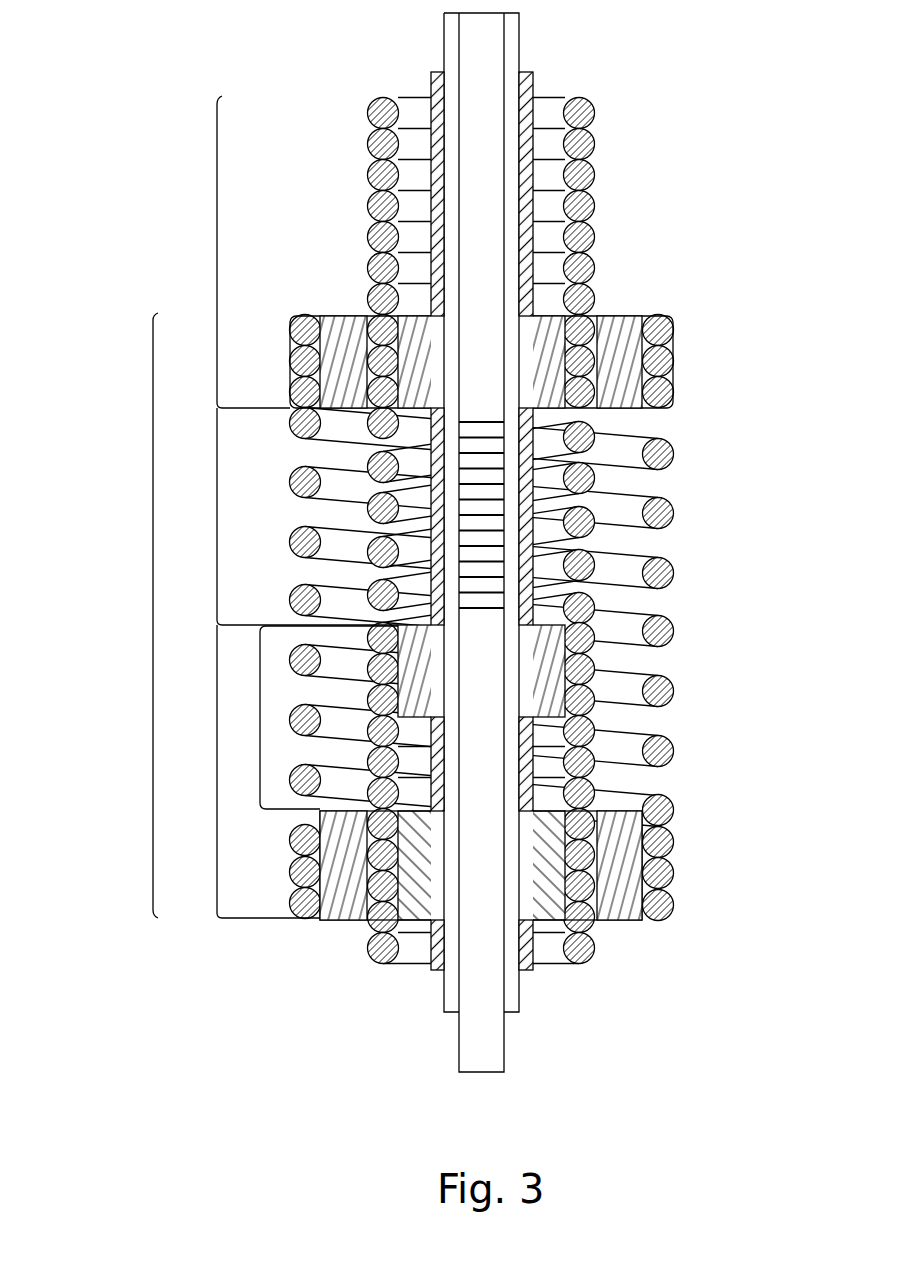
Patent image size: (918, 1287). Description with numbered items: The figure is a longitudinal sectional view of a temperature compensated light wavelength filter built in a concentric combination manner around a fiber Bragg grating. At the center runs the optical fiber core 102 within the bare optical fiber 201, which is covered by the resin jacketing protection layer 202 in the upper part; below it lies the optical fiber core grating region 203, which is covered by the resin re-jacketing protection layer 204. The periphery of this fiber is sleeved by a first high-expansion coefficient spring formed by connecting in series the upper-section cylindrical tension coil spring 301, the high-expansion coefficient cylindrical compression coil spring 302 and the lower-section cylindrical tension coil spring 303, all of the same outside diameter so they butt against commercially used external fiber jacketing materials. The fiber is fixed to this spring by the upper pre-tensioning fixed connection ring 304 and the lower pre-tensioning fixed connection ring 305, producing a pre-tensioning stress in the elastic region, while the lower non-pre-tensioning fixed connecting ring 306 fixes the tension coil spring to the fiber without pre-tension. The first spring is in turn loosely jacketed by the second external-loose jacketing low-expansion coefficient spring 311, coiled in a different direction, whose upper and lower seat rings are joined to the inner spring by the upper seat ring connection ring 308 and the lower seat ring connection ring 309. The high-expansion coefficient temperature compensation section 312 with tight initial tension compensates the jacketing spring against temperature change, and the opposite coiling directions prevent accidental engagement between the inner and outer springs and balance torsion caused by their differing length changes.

The optical fiber core 102 is at (470, 148).
The bare optical fiber 201 is at (443, 38).
The resin jacketing protection layer 202 is at (534, 255).
The optical fiber core grating region 203 is at (474, 447).
The resin re-jacketing protection layer 204 is at (540, 490).
The upper-section cylindrical tension coil spring 301 is at (368, 176).
The high-expansion coefficient cylindrical compression coil spring 302 is at (380, 468).
The lower-section cylindrical tension coil spring 303 is at (373, 739).
The upper pre-tensioning fixed connection ring 304 is at (538, 344).
The lower pre-tensioning fixed connection ring 305 is at (533, 660).
The lower non-pre-tensioning fixed connecting ring 306 is at (540, 873).
The upper seat ring connection ring 308 is at (612, 372).
The lower seat ring connection ring 309 is at (610, 840).
The second external-loose jacketing low-expansion coefficient spring 311 is at (292, 548).
The high-expansion coefficient temperature compensation section 312 is at (258, 718).